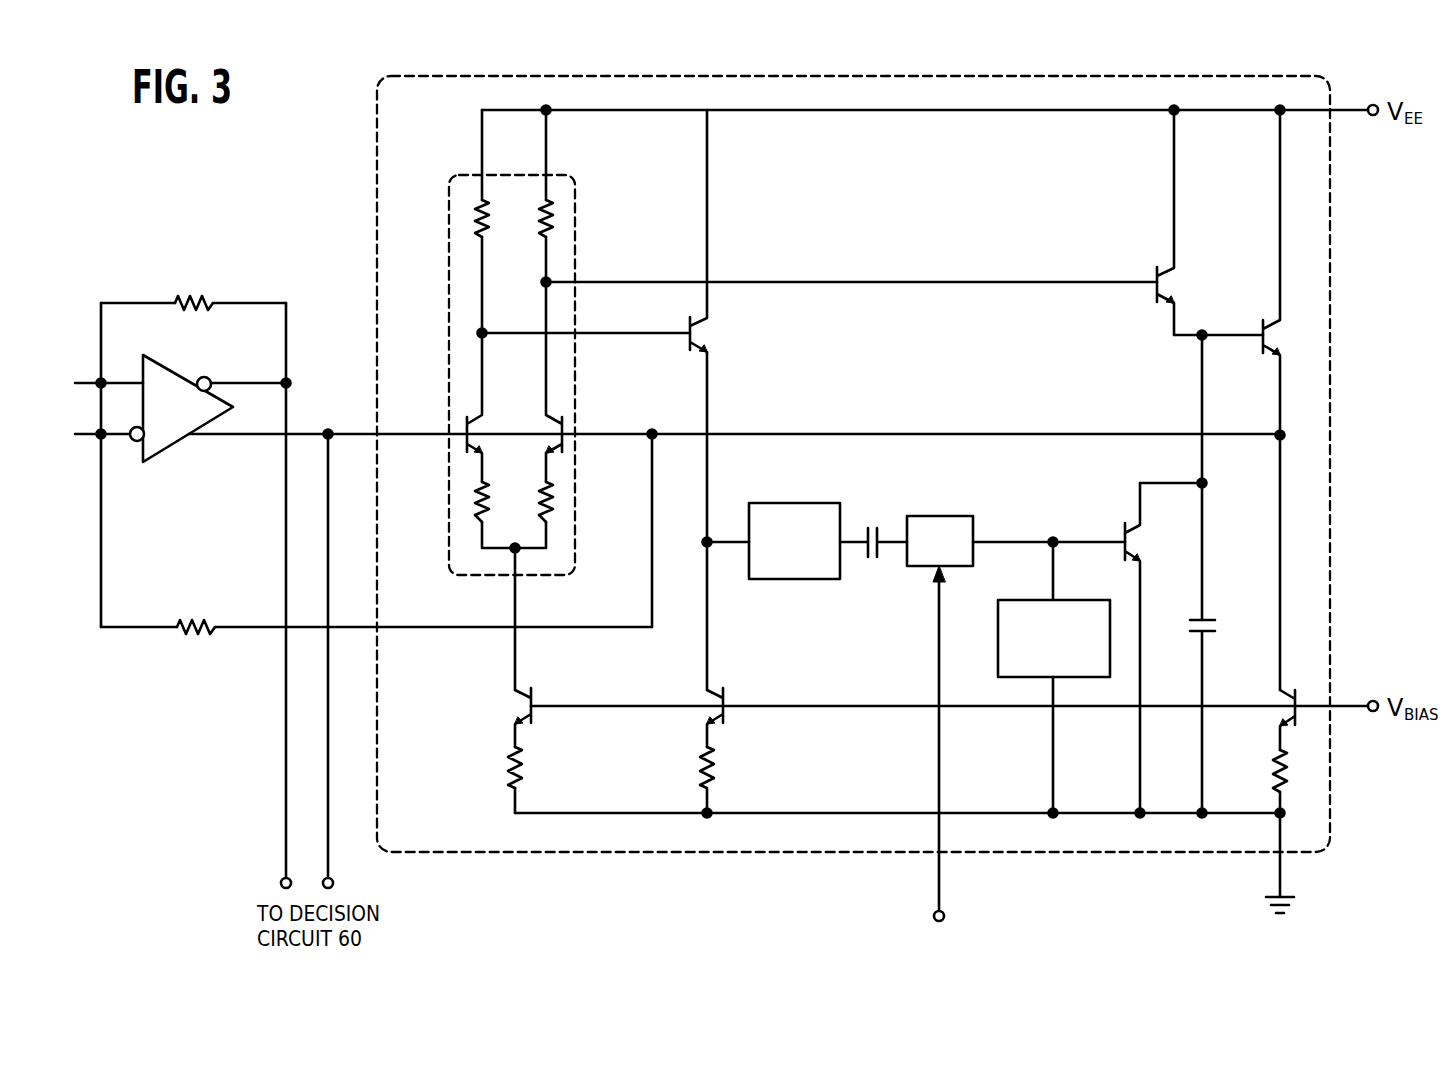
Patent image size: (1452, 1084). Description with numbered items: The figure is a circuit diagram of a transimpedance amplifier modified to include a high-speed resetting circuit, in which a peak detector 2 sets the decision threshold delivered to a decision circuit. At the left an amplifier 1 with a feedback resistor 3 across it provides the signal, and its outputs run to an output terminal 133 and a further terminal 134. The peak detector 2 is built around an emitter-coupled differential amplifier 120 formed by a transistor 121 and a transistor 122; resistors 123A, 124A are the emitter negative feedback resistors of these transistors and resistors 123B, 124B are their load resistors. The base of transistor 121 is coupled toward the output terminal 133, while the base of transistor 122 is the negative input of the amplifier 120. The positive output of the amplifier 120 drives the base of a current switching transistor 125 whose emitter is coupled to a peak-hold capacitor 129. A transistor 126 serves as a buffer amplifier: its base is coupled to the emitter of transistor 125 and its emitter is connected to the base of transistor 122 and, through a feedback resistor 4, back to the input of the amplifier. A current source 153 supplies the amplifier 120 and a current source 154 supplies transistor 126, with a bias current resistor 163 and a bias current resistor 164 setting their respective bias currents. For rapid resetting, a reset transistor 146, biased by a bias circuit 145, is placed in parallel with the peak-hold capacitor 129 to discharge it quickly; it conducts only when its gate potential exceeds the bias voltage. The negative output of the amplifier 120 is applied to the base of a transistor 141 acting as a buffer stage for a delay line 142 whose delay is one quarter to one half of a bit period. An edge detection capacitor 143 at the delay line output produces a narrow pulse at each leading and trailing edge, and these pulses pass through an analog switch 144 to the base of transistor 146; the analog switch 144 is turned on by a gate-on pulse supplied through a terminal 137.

The amplifier 1 is at (175, 373).
The peak detector 2 is at (1332, 226).
The feedback resistor 3 is at (189, 297).
The feedback resistor 4 is at (201, 624).
The emitter-coupled differential amplifier 120 is at (516, 176).
The transistor 121 is at (462, 431).
The transistor 122 is at (568, 431).
The emitter negative feedback resistor 123A is at (474, 506).
The load resistor 123B is at (480, 216).
The emitter negative feedback resistor 124A is at (556, 506).
The load resistor 124B is at (550, 216).
The current switching transistor 125 is at (1164, 283).
The transistor 126 is at (1259, 331).
The peak-hold capacitor 129 is at (1216, 627).
The output terminal 133 is at (333, 884).
The output terminal 134 is at (281, 884).
The terminal 137 is at (946, 914).
The transistor 141 is at (691, 349).
The delay line 142 is at (790, 502).
The edge detection capacitor 143 is at (869, 527).
The analog switch 144 is at (937, 515).
The bias circuit 145 is at (1010, 599).
The reset transistor 146 is at (1122, 529).
The current source 153 is at (533, 699).
The current source 154 is at (1290, 699).
The bias current resistor 163 is at (509, 776).
The bias current resistor 164 is at (1273, 773).